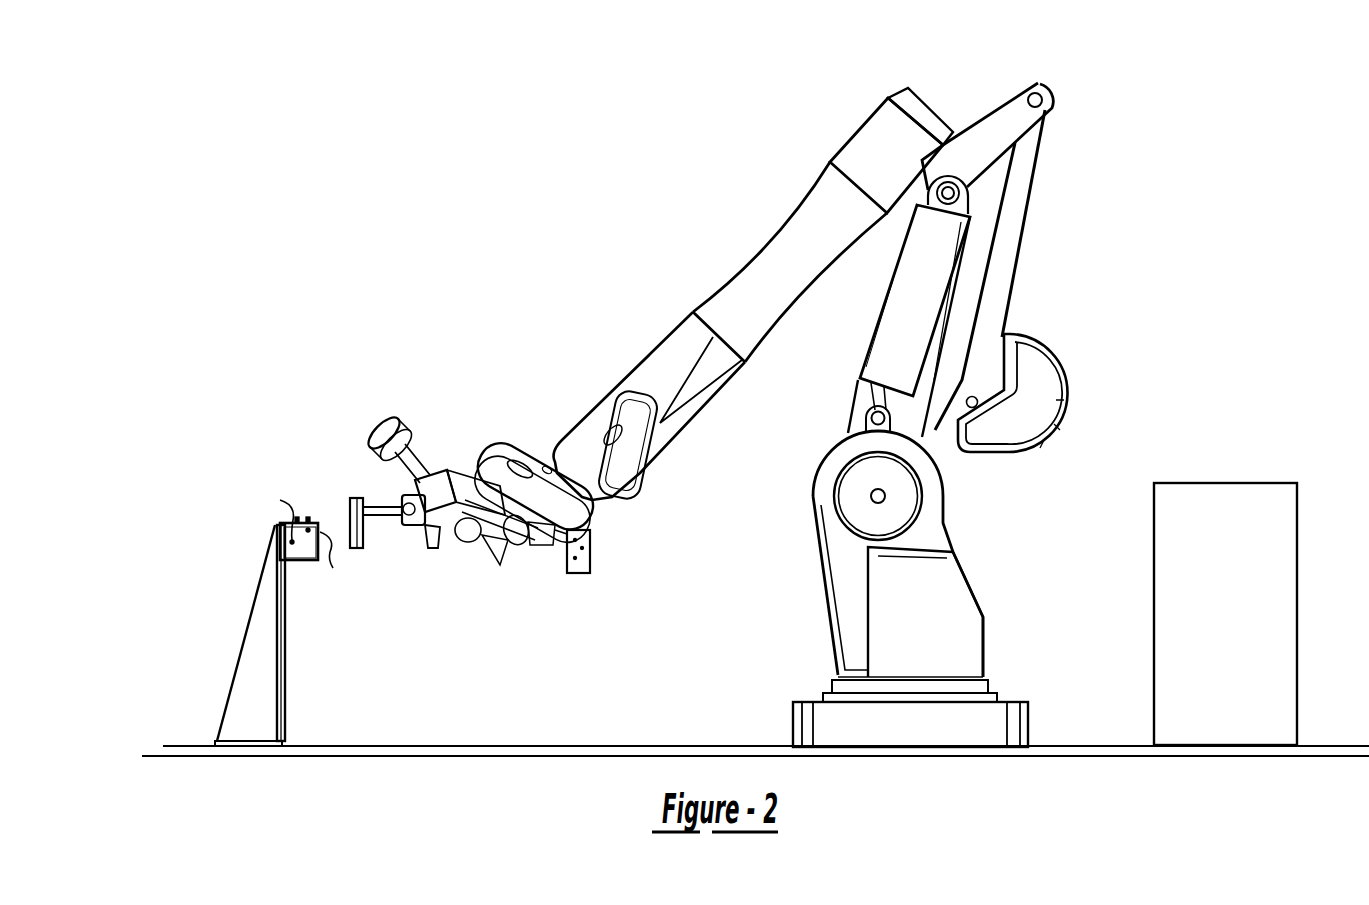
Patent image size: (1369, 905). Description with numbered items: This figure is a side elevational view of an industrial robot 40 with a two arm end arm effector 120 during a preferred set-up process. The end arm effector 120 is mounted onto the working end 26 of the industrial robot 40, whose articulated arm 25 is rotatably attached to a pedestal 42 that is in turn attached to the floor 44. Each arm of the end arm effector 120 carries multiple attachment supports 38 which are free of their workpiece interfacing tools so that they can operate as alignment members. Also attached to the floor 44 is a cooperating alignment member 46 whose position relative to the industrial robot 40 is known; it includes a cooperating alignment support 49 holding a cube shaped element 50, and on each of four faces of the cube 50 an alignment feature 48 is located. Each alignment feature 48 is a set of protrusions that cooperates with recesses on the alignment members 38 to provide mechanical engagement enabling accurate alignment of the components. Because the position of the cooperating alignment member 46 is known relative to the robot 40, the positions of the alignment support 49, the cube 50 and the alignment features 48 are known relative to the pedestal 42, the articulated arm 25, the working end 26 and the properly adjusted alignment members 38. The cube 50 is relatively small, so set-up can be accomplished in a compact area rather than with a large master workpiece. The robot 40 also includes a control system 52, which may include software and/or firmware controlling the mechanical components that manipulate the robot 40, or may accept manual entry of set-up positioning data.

The articulated arm 25 is at (932, 153).
The working end 26 is at (597, 513).
The attachment support 38 is at (402, 431).
The industrial robot 40 is at (1098, 241).
The pedestal 42 is at (993, 713).
The floor 44 is at (1065, 756).
The cooperating alignment member 46 is at (198, 629).
The alignment feature 48 is at (305, 531).
The cooperating alignment support 49 is at (262, 693).
The cube shaped element 50 is at (277, 523).
The control system 52 is at (1285, 585).
The two arm end arm effector 120 is at (510, 420).